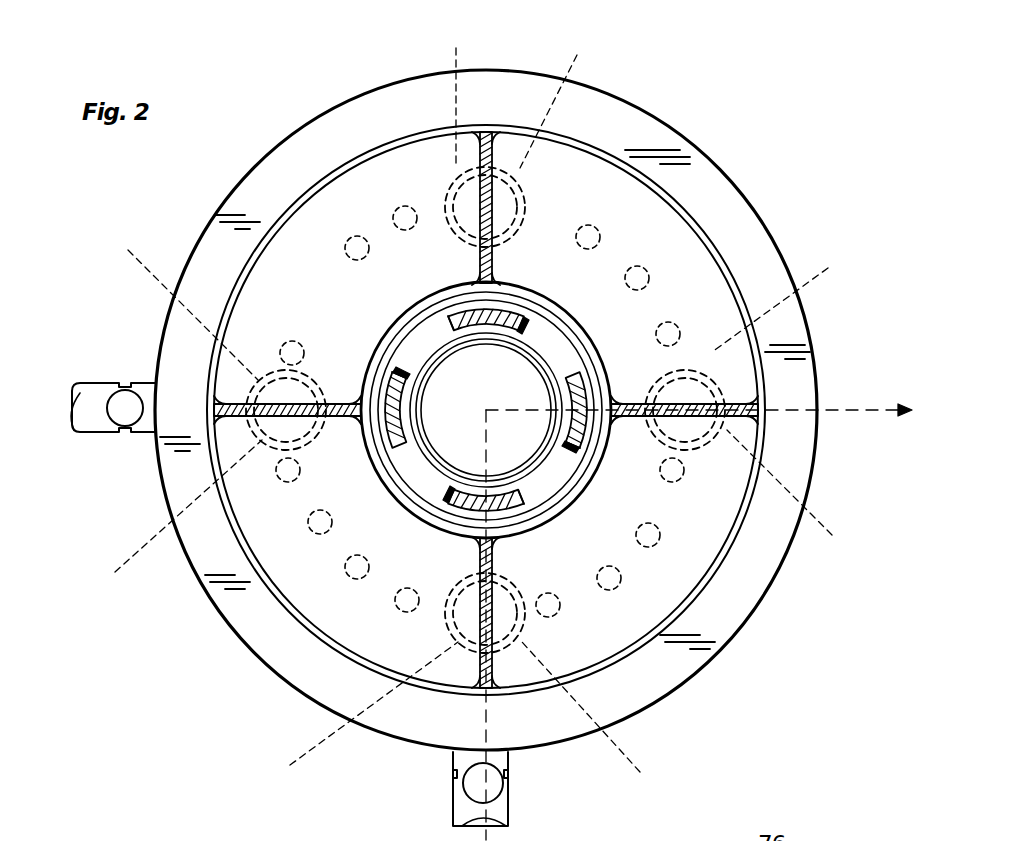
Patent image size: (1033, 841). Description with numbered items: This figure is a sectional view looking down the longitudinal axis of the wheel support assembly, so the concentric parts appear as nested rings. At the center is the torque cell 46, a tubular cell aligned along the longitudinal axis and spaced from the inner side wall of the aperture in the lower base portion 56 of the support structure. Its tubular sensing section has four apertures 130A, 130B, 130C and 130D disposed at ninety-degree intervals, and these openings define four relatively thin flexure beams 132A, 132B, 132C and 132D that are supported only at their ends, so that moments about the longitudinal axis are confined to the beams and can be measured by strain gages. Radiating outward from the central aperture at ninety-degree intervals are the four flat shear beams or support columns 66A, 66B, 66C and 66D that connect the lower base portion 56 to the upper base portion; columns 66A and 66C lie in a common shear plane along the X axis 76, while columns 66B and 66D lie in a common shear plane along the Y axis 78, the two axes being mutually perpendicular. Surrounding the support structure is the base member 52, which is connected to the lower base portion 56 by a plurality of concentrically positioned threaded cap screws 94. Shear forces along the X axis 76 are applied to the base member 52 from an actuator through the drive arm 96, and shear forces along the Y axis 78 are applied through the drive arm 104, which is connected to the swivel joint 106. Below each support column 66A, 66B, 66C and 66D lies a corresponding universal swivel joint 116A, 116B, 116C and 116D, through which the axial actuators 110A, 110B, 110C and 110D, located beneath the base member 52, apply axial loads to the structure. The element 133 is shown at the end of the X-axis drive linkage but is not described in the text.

The torque cell 46 is at (494, 410).
The base member 52 is at (486, 375).
The lower base portion 56 is at (486, 389).
The X axis 76 is at (699, 588).
The Y axis 78 is at (514, 750).
The threaded cap screws 94 is at (398, 213).
The drive arm 96 is at (88, 433).
The drive arm 104 is at (442, 794).
The swivel joint 106 is at (446, 762).
The pivot pin 133 is at (114, 376).
The support column 66A is at (198, 367).
The support column 66B is at (411, 684).
The support column 66C is at (765, 432).
The support column 66D is at (495, 134).
The axial actuator 110A is at (162, 518).
The axial actuator 110B is at (350, 712).
The axial actuator 110C is at (809, 491).
The axial actuator 110D is at (566, 98).
The universal swivel joint 116A is at (165, 304).
The universal swivel joint 116B is at (603, 720).
The universal swivel joint 116C is at (797, 298).
The universal swivel joint 116D is at (457, 93).
The aperture 130A is at (282, 537).
The aperture 130B is at (666, 534).
The aperture 130C is at (600, 249).
The aperture 130D is at (343, 238).
The flexure beam 132A is at (251, 278).
The flexure beam 132B is at (346, 620).
The flexure beam 132C is at (687, 287).
The flexure beam 132D is at (403, 184).